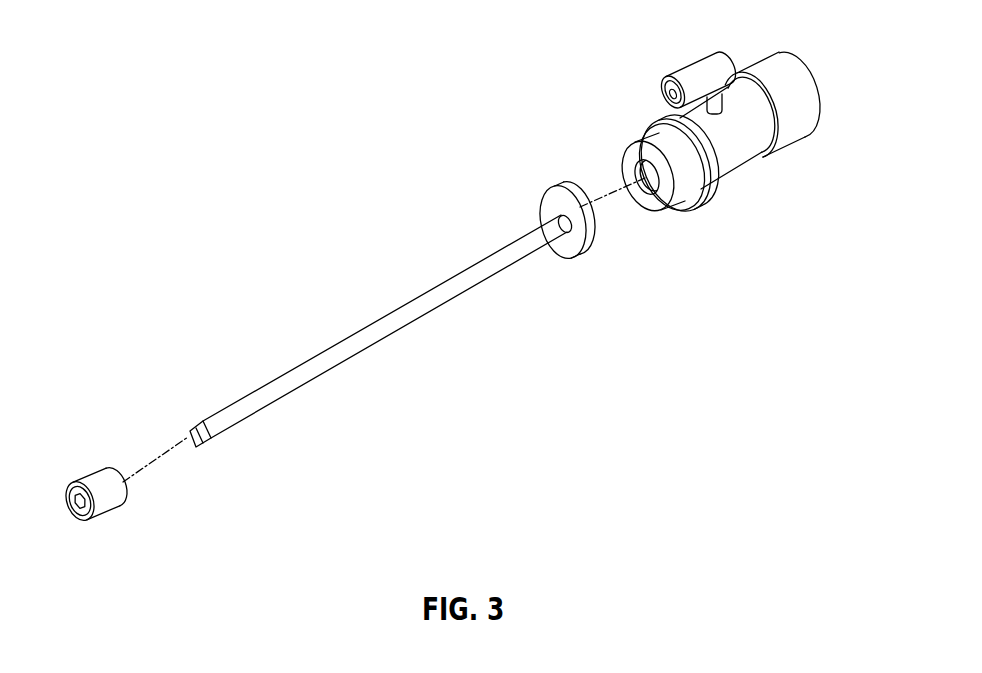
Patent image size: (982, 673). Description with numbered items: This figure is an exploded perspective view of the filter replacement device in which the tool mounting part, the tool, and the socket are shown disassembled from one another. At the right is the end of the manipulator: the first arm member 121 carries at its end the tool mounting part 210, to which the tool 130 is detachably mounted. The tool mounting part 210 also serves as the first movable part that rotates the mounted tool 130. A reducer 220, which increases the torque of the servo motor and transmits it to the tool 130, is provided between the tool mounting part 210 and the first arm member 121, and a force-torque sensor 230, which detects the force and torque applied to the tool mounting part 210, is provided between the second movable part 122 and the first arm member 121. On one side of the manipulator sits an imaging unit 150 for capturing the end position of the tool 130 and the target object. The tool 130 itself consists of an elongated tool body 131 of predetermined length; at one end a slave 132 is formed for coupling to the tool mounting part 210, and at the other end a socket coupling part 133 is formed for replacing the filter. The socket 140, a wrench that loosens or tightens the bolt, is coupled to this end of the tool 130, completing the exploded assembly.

The first arm member 121 is at (743, 152).
The second movable part 122 is at (638, 172).
The tool 130 is at (295, 328).
The tool body 131 is at (415, 312).
The slave 132 is at (578, 238).
The socket coupling part 133 is at (200, 445).
The socket 140 is at (105, 495).
The imaging unit 150 is at (700, 70).
The tool mounting part 210 is at (672, 204).
The reducer 220 is at (700, 193).
The force-torque sensor 230 is at (782, 70).